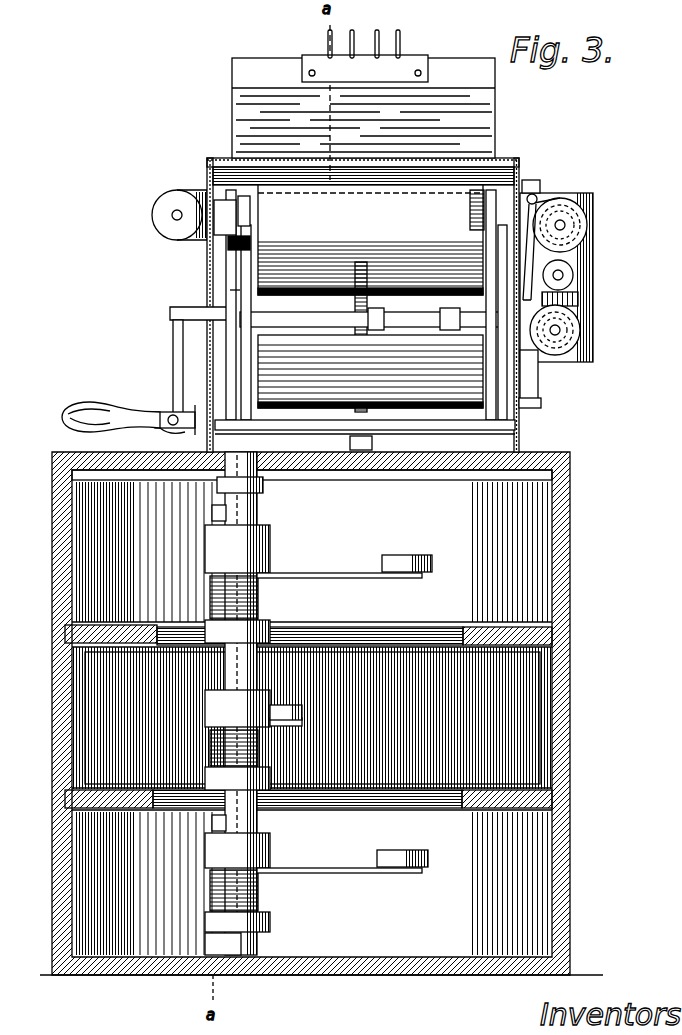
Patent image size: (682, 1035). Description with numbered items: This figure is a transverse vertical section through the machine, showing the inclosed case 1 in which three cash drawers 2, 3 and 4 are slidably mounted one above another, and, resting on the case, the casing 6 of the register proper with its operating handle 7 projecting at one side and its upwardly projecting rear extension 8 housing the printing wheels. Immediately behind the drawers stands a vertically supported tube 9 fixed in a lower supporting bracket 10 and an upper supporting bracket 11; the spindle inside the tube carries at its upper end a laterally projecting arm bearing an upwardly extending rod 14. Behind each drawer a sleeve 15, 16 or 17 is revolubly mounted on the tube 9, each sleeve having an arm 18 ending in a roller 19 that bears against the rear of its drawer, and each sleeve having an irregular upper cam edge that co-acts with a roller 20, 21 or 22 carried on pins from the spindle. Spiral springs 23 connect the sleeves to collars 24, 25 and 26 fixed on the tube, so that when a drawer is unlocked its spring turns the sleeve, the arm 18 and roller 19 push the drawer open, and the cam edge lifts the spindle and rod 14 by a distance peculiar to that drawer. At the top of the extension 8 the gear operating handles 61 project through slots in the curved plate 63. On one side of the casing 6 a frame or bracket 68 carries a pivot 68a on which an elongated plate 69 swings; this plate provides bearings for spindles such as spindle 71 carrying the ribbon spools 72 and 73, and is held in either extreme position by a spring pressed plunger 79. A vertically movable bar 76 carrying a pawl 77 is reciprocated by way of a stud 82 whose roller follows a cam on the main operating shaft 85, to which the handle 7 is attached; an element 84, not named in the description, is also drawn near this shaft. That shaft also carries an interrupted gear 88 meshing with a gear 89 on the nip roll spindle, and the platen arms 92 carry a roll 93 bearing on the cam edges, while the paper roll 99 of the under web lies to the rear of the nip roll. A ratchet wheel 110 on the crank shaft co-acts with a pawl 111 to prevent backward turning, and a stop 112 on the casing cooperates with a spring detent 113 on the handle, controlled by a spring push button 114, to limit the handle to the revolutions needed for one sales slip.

The inclosed case 1 is at (321, 713).
The cash drawer 2 is at (312, 546).
The cash drawer 3 is at (312, 718).
The cash drawer 4 is at (312, 882).
The casing of the register 6 is at (207, 272).
The operating handle 7 is at (173, 360).
The casing extension 8 is at (496, 96).
The tube 9 is at (258, 497).
The supporting bracket 10 is at (220, 945).
The supporting bracket 11 is at (240, 485).
The rod 14 is at (165, 412).
The sleeve 15 is at (237, 549).
The sleeve 16 is at (205, 700).
The sleeve 17 is at (212, 852).
The arm 18 is at (346, 580).
The roller 19 is at (414, 556).
The roller 20 is at (262, 528).
The roller 21 is at (177, 190).
The roller 22 is at (225, 823).
The spiral spring 23 is at (212, 890).
The collar 24 is at (237, 631).
The collar 25 is at (237, 778).
The collar 26 is at (270, 921).
The operating handle 61 is at (352, 32).
The curved plate 63 is at (418, 57).
The frame or bracket 68 is at (593, 268).
The pivot 68a is at (558, 275).
The elongated plate 69 is at (570, 292).
The spindle 71 is at (560, 330).
The ribbon spool 72 is at (588, 225).
The ribbon spool 73 is at (581, 330).
The vertically movable bar 76 is at (538, 182).
The pawl 77 is at (572, 206).
The spring pressed plunger 79 is at (531, 252).
The stud 82 is at (540, 406).
The bearing 84 is at (158, 328).
The main operating shaft 85 is at (404, 322).
The interrupted gear 88 is at (478, 356).
The gear 89 is at (470, 210).
The arm 92 is at (230, 290).
The roll 93 is at (365, 435).
The paper roll 99 is at (370, 240).
The ratchet wheel 110 is at (355, 314).
The pawl 111 is at (355, 398).
The stop 112 is at (160, 412).
The spring detent 113 is at (176, 426).
The spring push button 114 is at (150, 439).